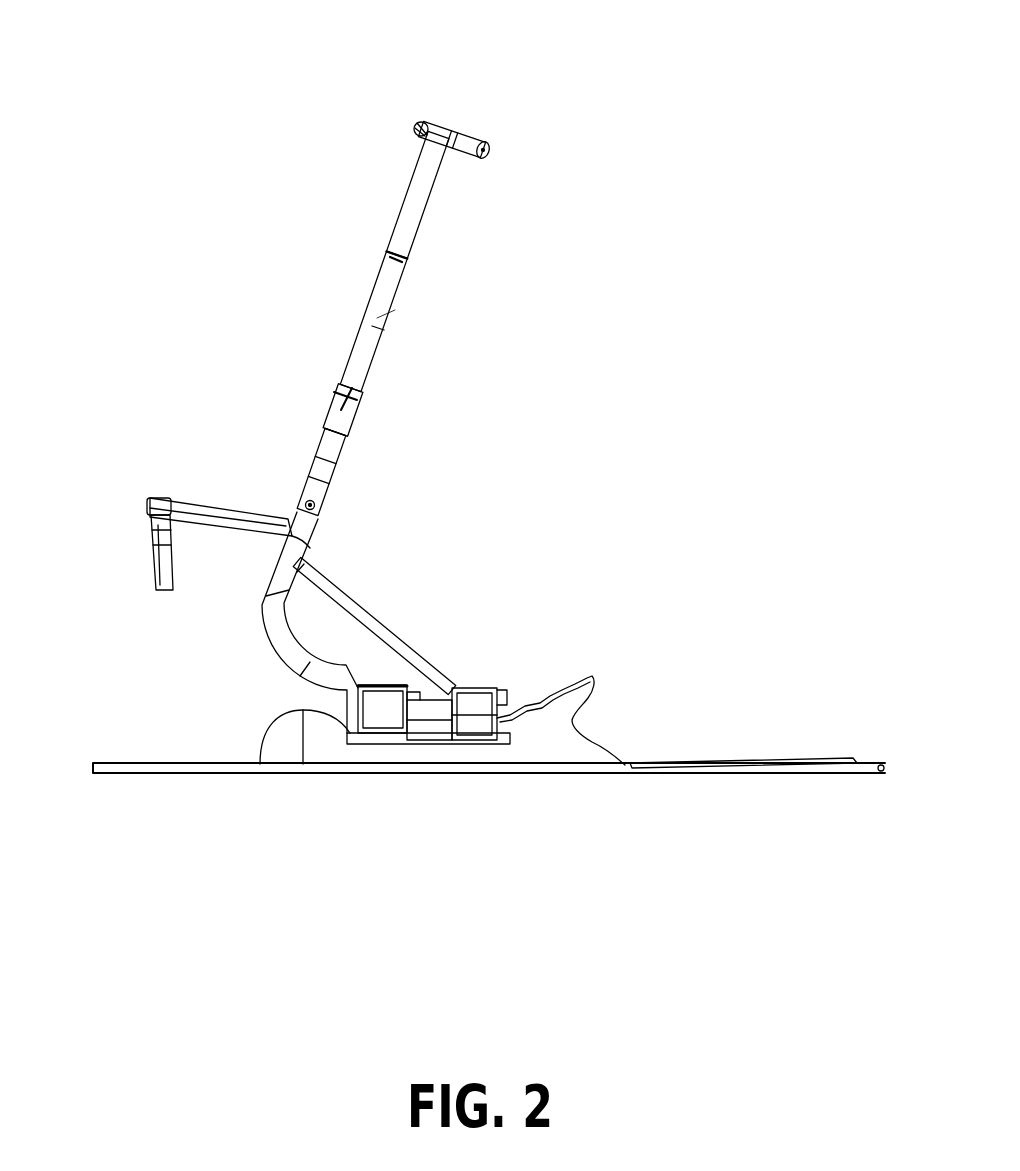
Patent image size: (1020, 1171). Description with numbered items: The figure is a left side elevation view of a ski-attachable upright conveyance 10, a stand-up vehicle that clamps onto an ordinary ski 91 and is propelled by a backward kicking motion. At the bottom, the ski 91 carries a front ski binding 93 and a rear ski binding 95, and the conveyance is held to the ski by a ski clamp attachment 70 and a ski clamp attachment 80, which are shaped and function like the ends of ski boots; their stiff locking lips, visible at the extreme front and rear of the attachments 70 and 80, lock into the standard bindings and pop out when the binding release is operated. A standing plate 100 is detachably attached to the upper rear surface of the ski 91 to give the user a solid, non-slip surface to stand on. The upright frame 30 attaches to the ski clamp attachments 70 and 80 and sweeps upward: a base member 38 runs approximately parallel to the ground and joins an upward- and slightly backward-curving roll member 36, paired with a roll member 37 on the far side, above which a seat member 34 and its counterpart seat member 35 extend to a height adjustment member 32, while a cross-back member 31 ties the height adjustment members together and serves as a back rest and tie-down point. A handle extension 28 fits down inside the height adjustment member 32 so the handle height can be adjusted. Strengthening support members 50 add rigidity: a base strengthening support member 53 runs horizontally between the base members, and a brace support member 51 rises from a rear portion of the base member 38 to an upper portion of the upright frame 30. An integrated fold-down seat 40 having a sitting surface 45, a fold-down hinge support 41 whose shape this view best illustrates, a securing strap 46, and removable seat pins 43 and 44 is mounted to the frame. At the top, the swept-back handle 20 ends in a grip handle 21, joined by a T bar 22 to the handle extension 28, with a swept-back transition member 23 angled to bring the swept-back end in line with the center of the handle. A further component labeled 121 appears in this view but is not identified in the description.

The ski-attachable upright conveyance 10 is at (771, 110).
The swept-back handle 20 is at (388, 63).
The grip handle 21 is at (470, 136).
The T bar 22 is at (446, 128).
The swept-back transition member 23 is at (420, 127).
The handle extension 28 is at (415, 184).
The upright frame 30 is at (472, 275).
The cross-back member 31 is at (345, 395).
The height adjustment member 32 is at (378, 303).
The seat member 34 is at (302, 452).
The seat member 35 is at (400, 314).
The roll member 36 is at (240, 661).
The roll member 37 is at (366, 401).
The base member 38 is at (440, 702).
The integrated fold-down seat 40 is at (130, 503).
The fold-down hinge support 41 is at (267, 537).
The removable seat pin 43 is at (312, 510).
The removable seat pin 44 is at (348, 331).
The sitting surface 45 is at (171, 497).
The securing strap 46 is at (153, 568).
The strengthening support members 50 is at (497, 588).
The brace support member 51 is at (352, 601).
The base strengthening support member 53 is at (386, 686).
The ski clamp attachment 70 is at (368, 765).
The ski clamp attachment 80 is at (464, 762).
The ski 91 is at (172, 770).
The front ski binding 93 is at (288, 762).
The rear ski binding 95 is at (553, 748).
The standing plate 100 is at (743, 745).
The shaft joint 121 is at (385, 257).